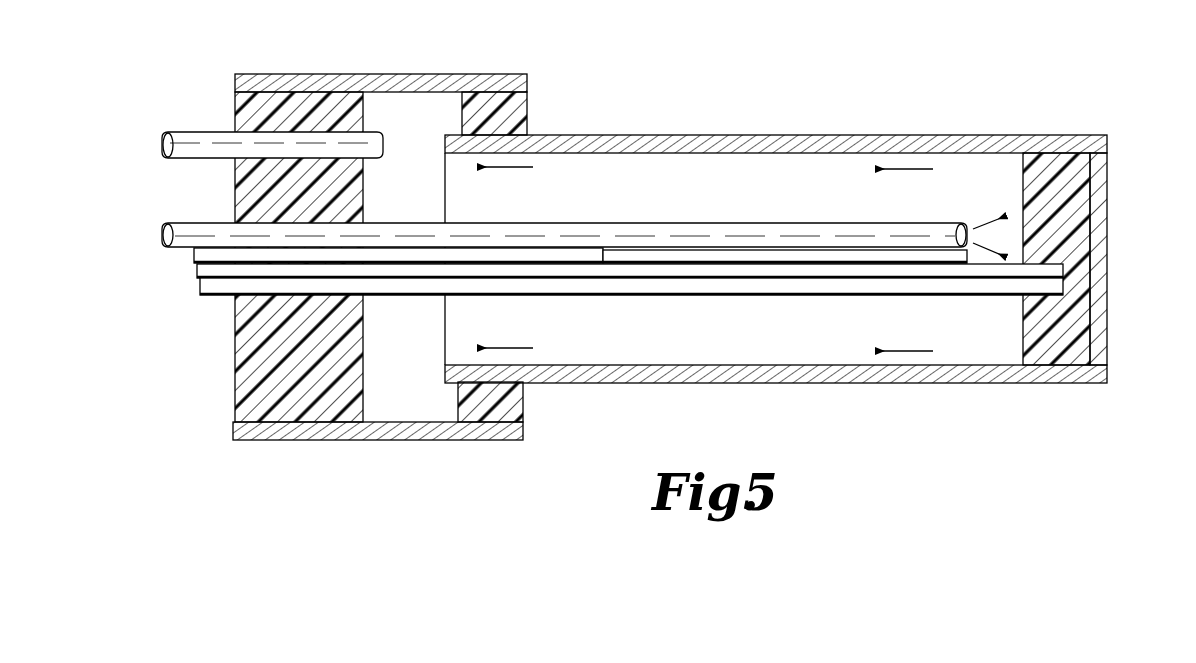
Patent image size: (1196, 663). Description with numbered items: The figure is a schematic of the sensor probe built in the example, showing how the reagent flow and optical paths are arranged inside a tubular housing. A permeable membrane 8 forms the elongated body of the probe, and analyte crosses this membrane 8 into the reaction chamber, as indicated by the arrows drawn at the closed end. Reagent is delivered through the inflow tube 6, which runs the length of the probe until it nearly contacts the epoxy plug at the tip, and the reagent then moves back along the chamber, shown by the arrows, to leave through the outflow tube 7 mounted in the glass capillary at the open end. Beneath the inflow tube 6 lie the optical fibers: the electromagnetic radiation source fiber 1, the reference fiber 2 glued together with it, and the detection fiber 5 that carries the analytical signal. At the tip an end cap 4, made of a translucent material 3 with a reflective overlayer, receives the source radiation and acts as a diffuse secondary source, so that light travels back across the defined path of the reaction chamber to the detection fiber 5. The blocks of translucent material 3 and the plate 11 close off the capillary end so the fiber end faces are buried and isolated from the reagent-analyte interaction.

The electromagnetic radiation source fiber 1 is at (194, 256).
The reference fiber 2 is at (219, 295).
The translucent material 3 is at (306, 104).
The end cap 4 is at (1107, 243).
The detection fiber 5 is at (197, 270).
The inflow tube 6 is at (532, 221).
The outflow tube 7 is at (207, 132).
The permeable membrane 8 is at (712, 135).
The top plate 11 is at (425, 75).